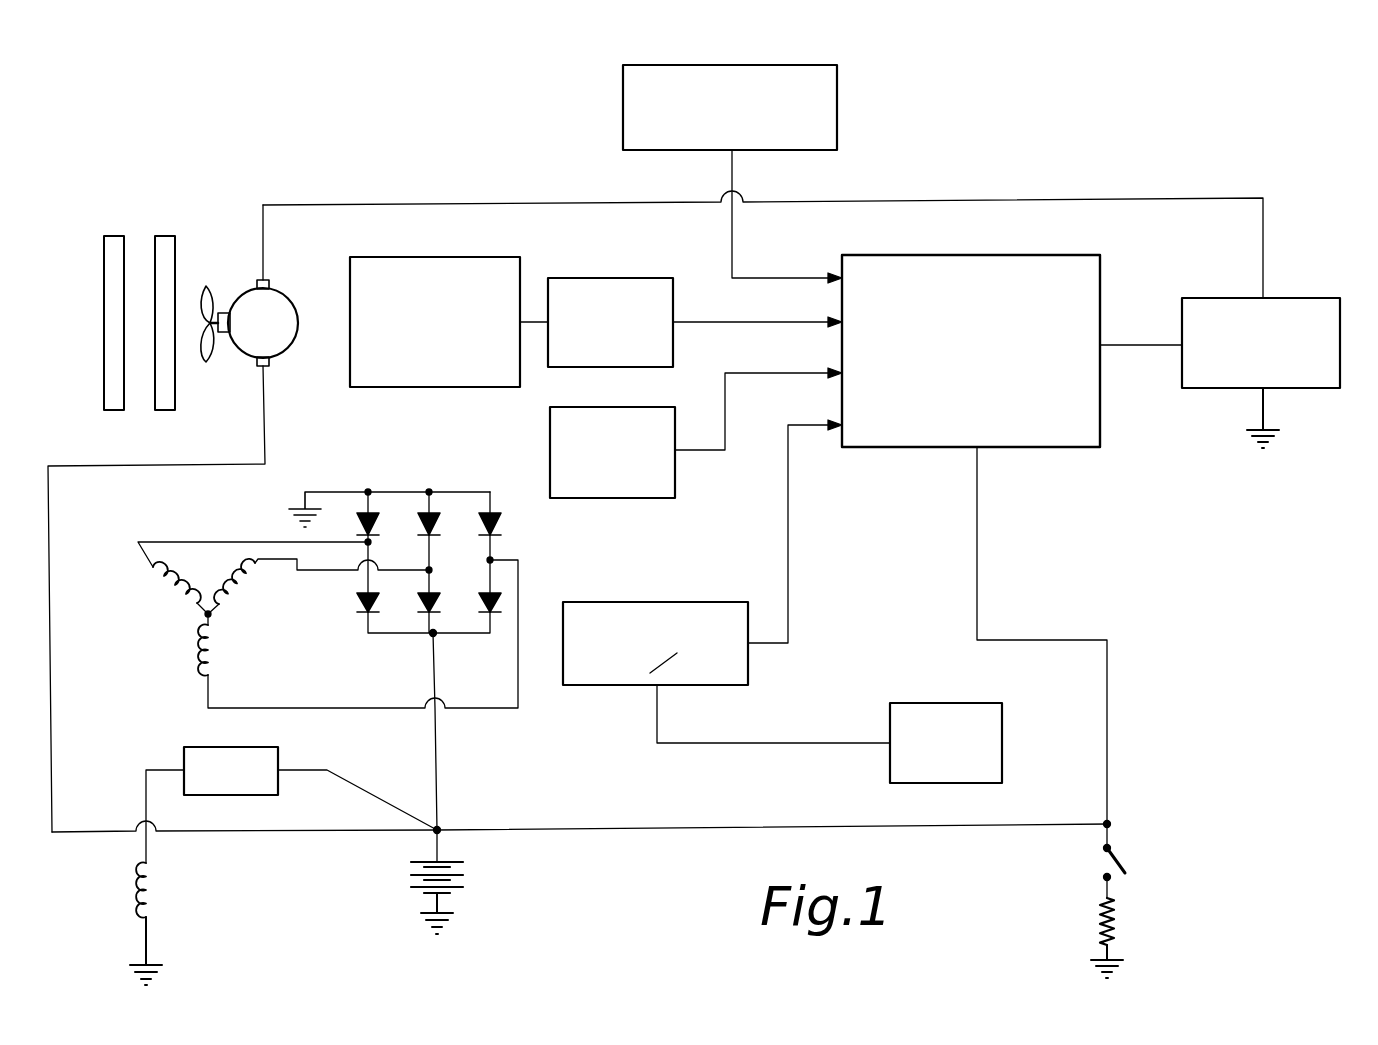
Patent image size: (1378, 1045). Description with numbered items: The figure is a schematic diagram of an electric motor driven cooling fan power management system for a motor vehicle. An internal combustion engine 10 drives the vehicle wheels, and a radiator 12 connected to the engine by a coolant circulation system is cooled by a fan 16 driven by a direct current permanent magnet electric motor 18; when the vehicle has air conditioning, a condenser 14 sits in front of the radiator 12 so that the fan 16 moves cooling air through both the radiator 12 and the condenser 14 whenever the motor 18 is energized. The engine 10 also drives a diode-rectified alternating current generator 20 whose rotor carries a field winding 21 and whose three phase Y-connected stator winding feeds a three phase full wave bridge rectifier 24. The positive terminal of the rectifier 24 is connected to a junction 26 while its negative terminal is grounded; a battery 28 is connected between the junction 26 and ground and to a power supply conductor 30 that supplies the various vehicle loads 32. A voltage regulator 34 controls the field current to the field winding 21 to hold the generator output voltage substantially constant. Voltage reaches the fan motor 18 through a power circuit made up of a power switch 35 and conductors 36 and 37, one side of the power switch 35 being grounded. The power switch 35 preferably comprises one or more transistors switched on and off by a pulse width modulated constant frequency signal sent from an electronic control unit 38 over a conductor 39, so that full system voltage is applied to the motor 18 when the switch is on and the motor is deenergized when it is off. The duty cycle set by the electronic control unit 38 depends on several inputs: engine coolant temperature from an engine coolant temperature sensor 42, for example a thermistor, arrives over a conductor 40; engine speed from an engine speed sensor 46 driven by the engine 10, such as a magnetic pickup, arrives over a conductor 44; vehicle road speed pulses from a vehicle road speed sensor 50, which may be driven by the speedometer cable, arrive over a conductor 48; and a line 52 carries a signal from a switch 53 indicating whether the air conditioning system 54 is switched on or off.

The internal combustion engine 10 is at (445, 262).
The radiator 12 is at (167, 240).
The condenser 14 is at (118, 238).
The fan 16 is at (210, 287).
The direct current permanent magnet electric motor 18 is at (277, 298).
The diode-rectified alternating current generator 20 is at (268, 615).
The field winding 21 is at (158, 890).
The three phase full wave bridge rectifier 24 is at (512, 542).
The junction 26 is at (440, 828).
The battery 28 is at (465, 887).
The power supply conductor 30 is at (620, 828).
The vehicle loads 32 is at (1118, 912).
The voltage regulator 34 is at (275, 760).
The power switch 35 is at (1322, 298).
The conductor 36 is at (298, 832).
The conductor 37 is at (878, 200).
The electronic control unit 38 is at (1012, 255).
The conductor 39 is at (1125, 345).
The conductor 40 is at (732, 243).
The engine coolant temperature sensor 42 is at (840, 106).
The conductor 44 is at (763, 323).
The engine speed sensor 46 is at (626, 280).
The conductor 48 is at (776, 376).
The vehicle road speed sensor 50 is at (658, 489).
The line 52 is at (790, 516).
The switch 53 is at (672, 602).
The air conditioning system 54 is at (952, 703).